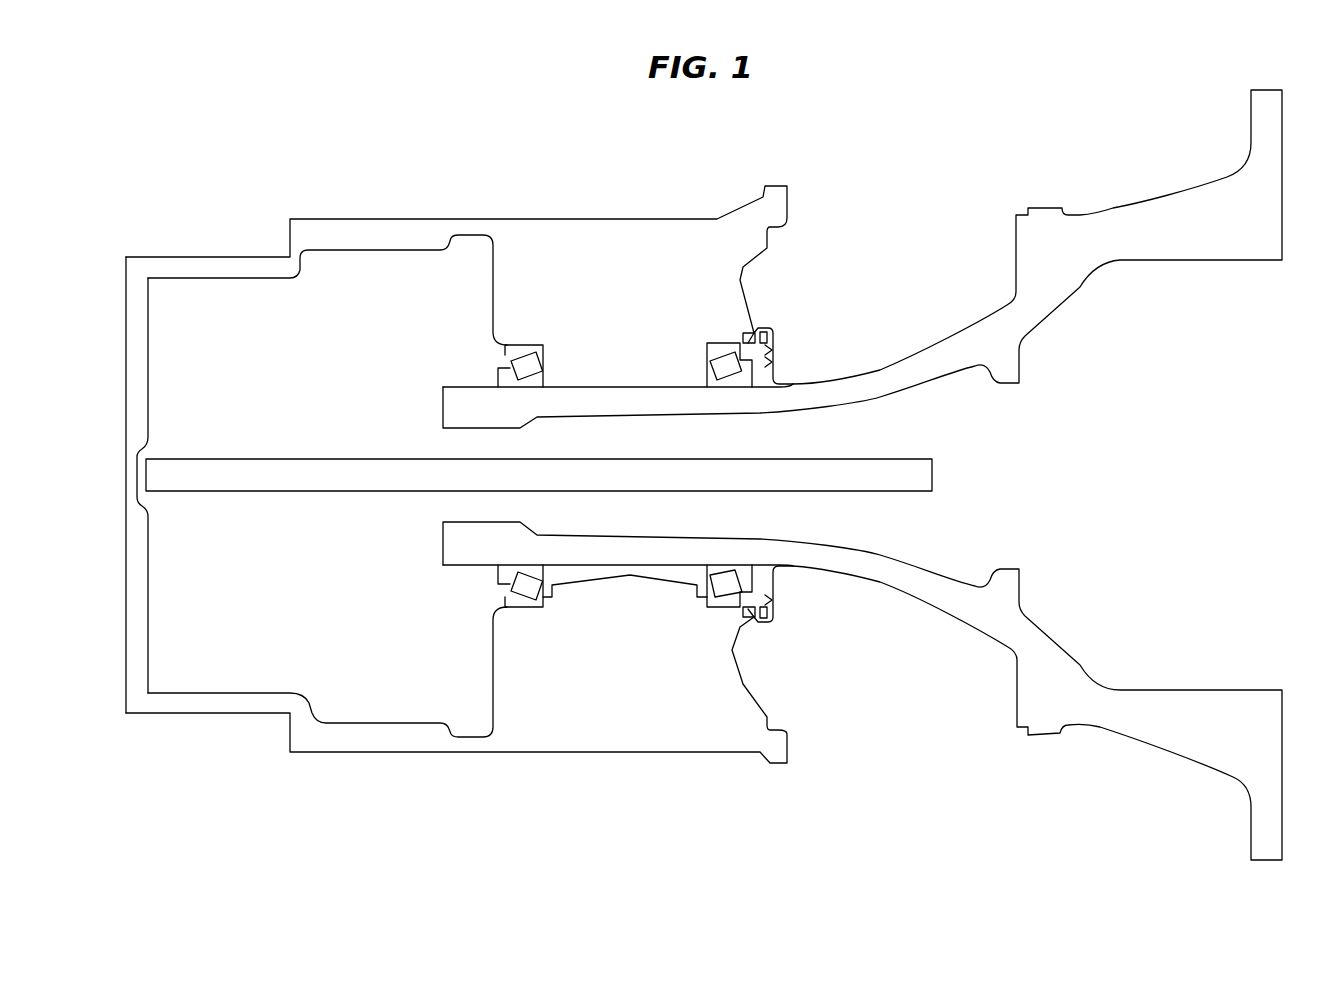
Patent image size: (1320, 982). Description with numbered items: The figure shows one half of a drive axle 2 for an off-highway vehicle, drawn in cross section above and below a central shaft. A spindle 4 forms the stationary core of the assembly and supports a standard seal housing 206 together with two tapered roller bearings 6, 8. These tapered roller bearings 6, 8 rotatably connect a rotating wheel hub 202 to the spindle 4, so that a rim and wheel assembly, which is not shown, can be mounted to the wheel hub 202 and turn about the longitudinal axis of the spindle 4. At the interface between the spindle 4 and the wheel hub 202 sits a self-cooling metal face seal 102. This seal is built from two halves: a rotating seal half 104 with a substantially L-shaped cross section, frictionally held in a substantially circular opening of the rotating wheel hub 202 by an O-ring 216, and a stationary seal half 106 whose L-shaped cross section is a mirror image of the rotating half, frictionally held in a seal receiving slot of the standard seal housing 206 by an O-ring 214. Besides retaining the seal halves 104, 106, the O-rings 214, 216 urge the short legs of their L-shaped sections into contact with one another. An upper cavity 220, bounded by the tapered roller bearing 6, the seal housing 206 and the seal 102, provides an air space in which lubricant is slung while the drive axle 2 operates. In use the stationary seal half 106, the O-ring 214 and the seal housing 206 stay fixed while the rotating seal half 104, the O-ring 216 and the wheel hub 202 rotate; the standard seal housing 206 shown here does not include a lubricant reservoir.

The drive axle 2 is at (945, 172).
The spindle 4 is at (934, 348).
The tapered roller bearing 6 is at (712, 365).
The tapered roller bearing 8 is at (513, 362).
The self-cooling metal face seal 102 is at (764, 332).
The rotating seal half 104 is at (752, 333).
The stationary seal half 106 is at (774, 602).
The rotating wheel hub 202 is at (598, 219).
The standard seal housing 206 is at (774, 350).
The O-ring 214 is at (764, 619).
The O-ring 216 is at (752, 618).
The upper cavity 220 is at (774, 358).